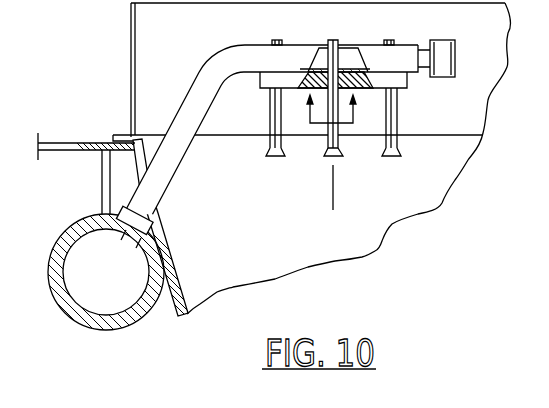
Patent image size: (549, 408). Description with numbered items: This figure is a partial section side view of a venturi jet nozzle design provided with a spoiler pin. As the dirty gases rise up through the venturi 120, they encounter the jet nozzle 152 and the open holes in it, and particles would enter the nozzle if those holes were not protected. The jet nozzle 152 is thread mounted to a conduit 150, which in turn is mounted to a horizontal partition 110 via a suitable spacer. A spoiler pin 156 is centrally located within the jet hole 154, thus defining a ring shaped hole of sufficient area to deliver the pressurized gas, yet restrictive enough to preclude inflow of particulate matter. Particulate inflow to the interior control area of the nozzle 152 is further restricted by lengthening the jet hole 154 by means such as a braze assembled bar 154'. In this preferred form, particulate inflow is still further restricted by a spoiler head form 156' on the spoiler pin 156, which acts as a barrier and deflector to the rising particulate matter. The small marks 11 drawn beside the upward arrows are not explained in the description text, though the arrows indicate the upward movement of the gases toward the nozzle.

The horizontal partition 110 is at (92, 143).
The venturi 120 is at (177, 274).
The conduit 150 is at (110, 331).
The jet nozzle 152 is at (174, 96).
The jet hole 154 is at (347, 37).
The braze assembled bar 154' is at (371, 93).
The spoiler pin 156 is at (363, 116).
The spoiler head form 156' is at (365, 187).
The flow arrows 11 is at (372, 97).